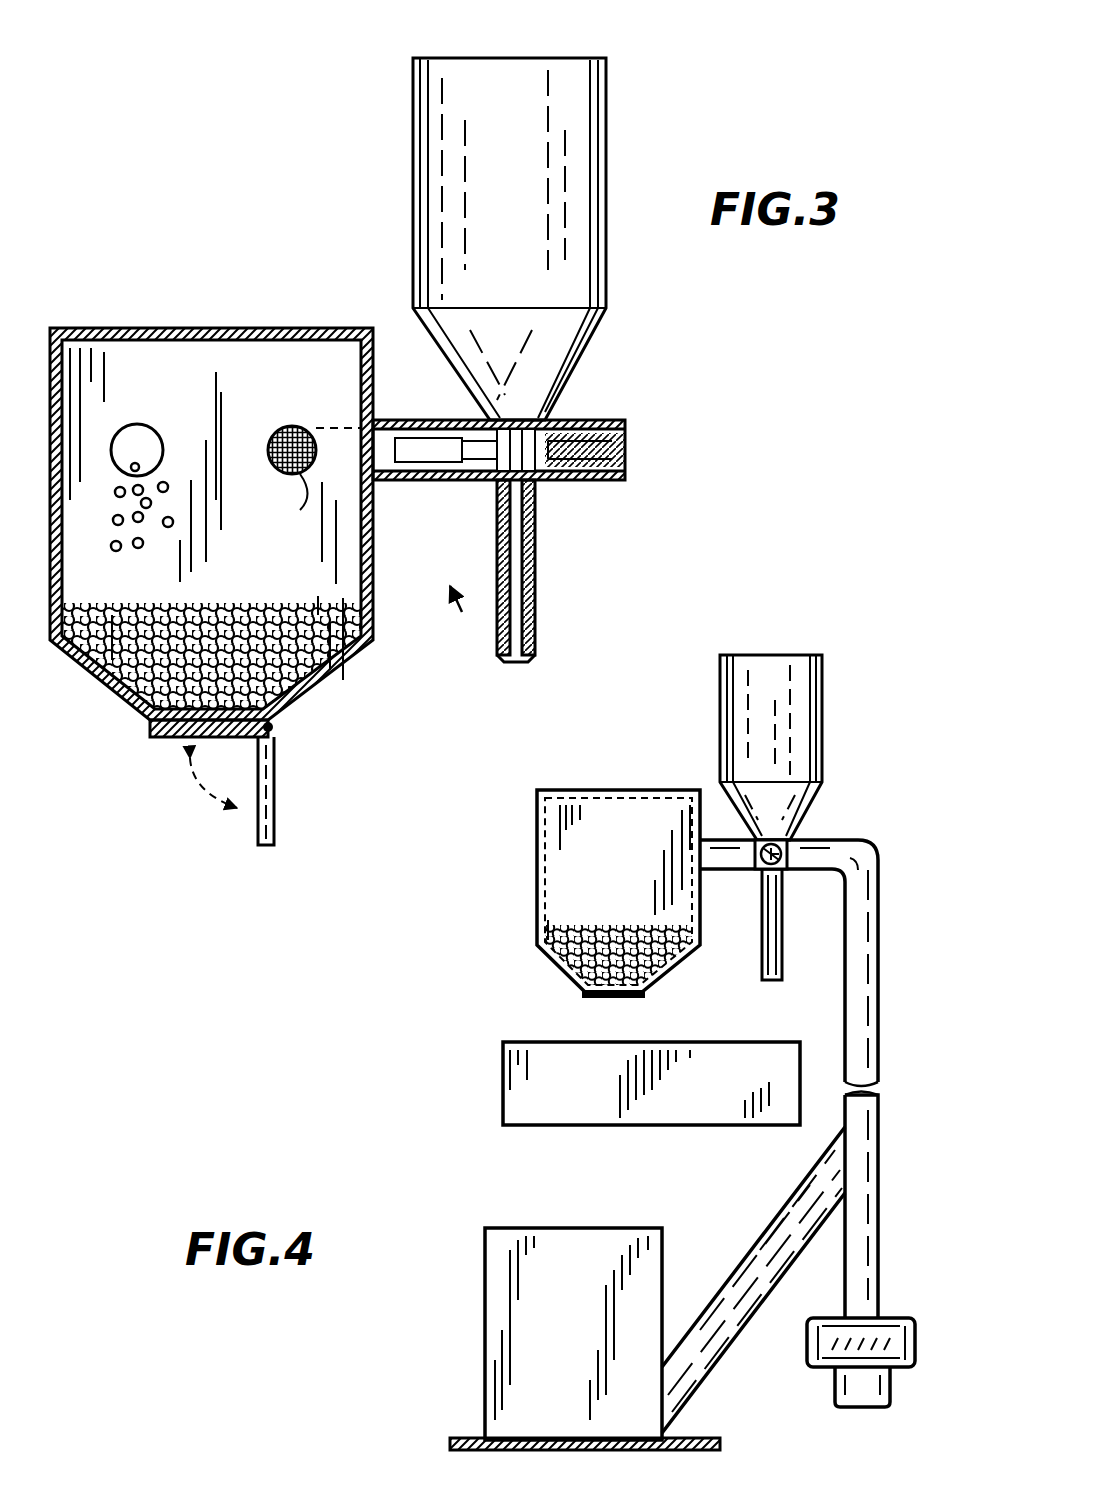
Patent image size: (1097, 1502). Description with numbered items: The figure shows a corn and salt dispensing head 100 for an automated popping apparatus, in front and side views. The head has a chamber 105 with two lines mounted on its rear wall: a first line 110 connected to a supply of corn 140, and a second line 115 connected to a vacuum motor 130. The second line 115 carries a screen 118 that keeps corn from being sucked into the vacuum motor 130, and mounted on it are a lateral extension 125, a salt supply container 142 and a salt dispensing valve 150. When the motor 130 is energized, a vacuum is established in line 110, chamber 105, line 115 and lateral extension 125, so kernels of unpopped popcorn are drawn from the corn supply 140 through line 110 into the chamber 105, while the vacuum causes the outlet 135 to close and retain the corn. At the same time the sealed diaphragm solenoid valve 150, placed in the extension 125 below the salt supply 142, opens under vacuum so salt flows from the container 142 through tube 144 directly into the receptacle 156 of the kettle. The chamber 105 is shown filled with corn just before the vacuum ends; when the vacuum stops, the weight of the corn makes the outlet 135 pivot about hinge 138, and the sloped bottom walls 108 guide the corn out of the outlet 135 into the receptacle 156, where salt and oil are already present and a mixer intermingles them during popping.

In FIG. 3, the corn and salt dispensing head 100 is at (474, 618).
In FIG. 3, the chamber 105 is at (228, 342).
In FIG. 4, the chamber 105 is at (632, 792).
In FIG. 3, the sloped bottom walls 108 is at (345, 662).
In FIG. 3, the first line 110 is at (168, 413).
In FIG. 4, the first line 110 is at (766, 1234).
In FIG. 3, the second line 115 is at (282, 428).
In FIG. 4, the second line 115 is at (866, 1262).
In FIG. 3, the screen 118 is at (304, 504).
In FIG. 3, the lateral extension 125 is at (425, 497).
In FIG. 4, the vacuum motor 130 is at (816, 1356).
In FIG. 3, the outlet 135 is at (170, 740).
In FIG. 3, the hinge 138 is at (274, 727).
In FIG. 4, the supply of corn 140 is at (583, 1331).
In FIG. 3, the salt supply container 142 is at (520, 124).
In FIG. 4, the salt supply container 142 is at (795, 658).
In FIG. 3, the tube 144 is at (536, 572).
In FIG. 4, the tube 144 is at (784, 975).
In FIG. 3, the salt dispensing valve 150 is at (482, 428).
In FIG. 4, the salt dispensing valve 150 is at (790, 842).
In FIG. 4, the kettle receptacle 156 is at (588, 1101).